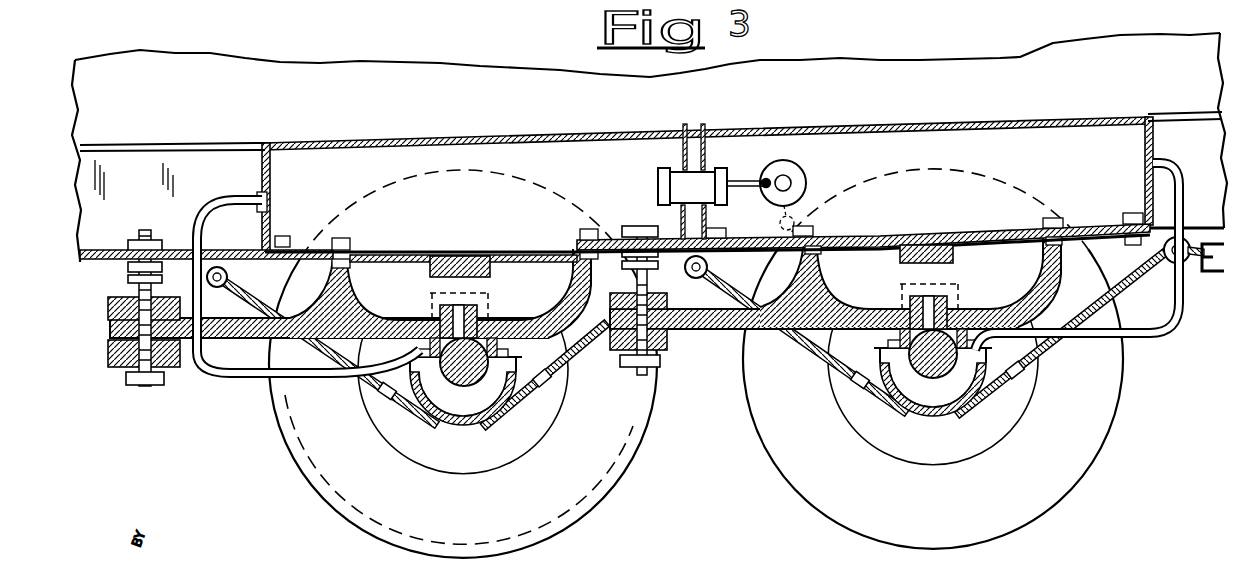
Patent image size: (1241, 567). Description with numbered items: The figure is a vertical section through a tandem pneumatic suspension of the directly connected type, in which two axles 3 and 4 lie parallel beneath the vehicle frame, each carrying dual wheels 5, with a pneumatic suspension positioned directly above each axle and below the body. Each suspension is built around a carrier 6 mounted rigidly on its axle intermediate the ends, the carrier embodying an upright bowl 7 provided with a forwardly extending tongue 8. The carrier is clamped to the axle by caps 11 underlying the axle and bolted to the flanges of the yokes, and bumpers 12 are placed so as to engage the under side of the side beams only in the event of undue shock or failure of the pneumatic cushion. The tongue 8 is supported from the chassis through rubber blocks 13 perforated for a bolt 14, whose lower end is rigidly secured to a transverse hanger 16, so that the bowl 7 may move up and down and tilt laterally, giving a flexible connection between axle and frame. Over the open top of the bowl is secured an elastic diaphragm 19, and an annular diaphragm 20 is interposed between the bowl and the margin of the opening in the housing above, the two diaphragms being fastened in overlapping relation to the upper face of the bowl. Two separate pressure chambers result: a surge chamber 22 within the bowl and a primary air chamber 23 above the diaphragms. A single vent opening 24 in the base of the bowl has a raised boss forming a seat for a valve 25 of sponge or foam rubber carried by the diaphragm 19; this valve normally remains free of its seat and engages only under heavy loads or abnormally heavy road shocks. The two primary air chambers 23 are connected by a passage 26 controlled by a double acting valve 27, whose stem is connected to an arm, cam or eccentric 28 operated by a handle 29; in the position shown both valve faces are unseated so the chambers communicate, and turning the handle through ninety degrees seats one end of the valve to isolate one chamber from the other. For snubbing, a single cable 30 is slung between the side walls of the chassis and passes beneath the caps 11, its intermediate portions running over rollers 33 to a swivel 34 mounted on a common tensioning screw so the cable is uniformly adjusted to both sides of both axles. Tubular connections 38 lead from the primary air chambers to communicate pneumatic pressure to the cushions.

The axle 3 is at (462, 385).
The axle 4 is at (947, 387).
The dual wheels 5 is at (696, 363).
The carrier 6 is at (580, 352).
The bowl 7 is at (568, 280).
The tongue 8 is at (705, 332).
The caps 11 is at (437, 400).
The bumpers 12 is at (430, 297).
The rubber blocks 13 is at (113, 315).
The bolt 14 is at (650, 375).
The transverse hanger 16 is at (667, 340).
The elastic diaphragm 19 is at (383, 256).
The annular diaphragm 20 is at (308, 247).
The surge chamber 22 is at (695, 279).
The primary air chamber 23 is at (649, 147).
The vent opening 24 is at (470, 307).
The valve 25 is at (458, 262).
The passage 26 is at (694, 133).
The double acting valve 27 is at (738, 168).
The arm, cam or eccentric 28 is at (800, 170).
The handle 29 is at (810, 215).
The cable 30 is at (560, 384).
The rollers 33 is at (700, 278).
The swivel 34 is at (1212, 280).
The tubular connections 38 is at (213, 197).